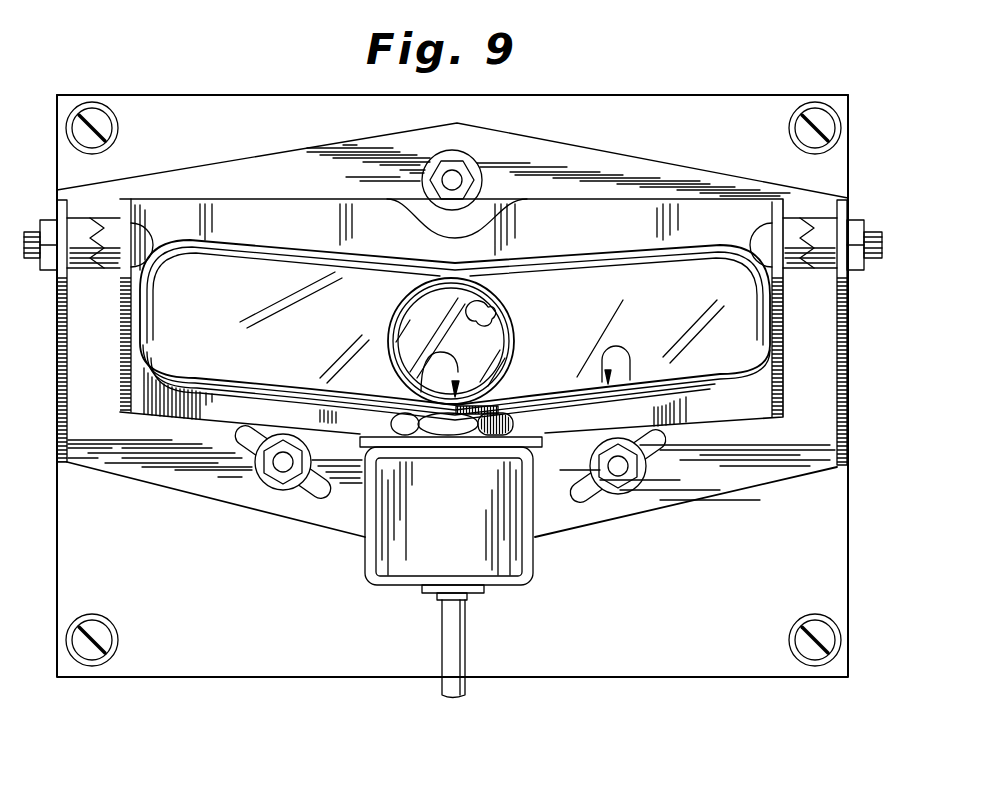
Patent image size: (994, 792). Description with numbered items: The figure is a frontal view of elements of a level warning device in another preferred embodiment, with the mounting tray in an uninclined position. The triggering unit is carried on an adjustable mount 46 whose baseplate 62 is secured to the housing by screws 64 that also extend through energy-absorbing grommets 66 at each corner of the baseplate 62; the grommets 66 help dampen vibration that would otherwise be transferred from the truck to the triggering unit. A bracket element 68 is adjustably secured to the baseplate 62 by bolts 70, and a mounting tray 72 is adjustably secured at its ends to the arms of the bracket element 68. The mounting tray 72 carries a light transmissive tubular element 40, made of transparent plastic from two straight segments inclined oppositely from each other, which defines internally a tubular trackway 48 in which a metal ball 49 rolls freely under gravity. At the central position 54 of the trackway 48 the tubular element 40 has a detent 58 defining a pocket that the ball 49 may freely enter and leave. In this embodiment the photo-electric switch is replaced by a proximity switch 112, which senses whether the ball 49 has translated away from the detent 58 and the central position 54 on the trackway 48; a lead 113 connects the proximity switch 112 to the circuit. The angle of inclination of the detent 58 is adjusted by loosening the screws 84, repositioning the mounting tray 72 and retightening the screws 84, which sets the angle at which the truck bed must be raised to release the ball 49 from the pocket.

The adjustable mount 46 is at (778, 90).
The baseplate 62 is at (620, 96).
The bracket element 68 is at (527, 137).
The bolts 70 is at (452, 178).
The mounting tray 72 is at (158, 213).
The screws 84 is at (765, 217).
The light transmissive tubular element 40 is at (238, 247).
The detent 58 is at (488, 355).
The metal ball 49 is at (484, 314).
The central position 54 is at (438, 366).
The tubular trackway 48 is at (657, 443).
The proximity switch 112 is at (410, 582).
The lead 113 is at (464, 650).
The screws 64 is at (88, 660).
The energy-absorbing grommets 66 is at (108, 662).